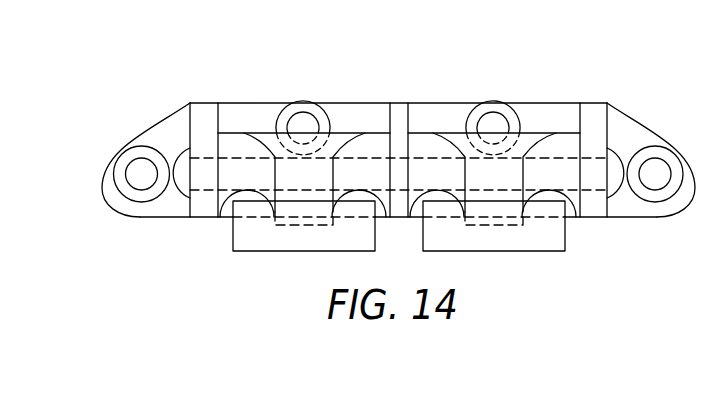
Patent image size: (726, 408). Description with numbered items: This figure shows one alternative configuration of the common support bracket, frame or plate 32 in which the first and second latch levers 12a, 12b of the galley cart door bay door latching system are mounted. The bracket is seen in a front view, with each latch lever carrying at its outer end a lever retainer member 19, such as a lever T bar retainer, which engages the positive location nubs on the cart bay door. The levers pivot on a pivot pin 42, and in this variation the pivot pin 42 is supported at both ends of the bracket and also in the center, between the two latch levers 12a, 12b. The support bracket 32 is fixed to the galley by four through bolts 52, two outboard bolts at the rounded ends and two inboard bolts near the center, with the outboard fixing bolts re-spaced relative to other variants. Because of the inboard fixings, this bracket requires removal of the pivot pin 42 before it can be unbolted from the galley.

The support bracket, frame or plate 32 is at (148, 128).
The first latch lever 12a is at (267, 134).
The second latch lever 12b is at (536, 134).
The through bolts 52 is at (143, 174).
The pivot pin 42 is at (181, 190).
The lever retainer member 19 is at (306, 251).